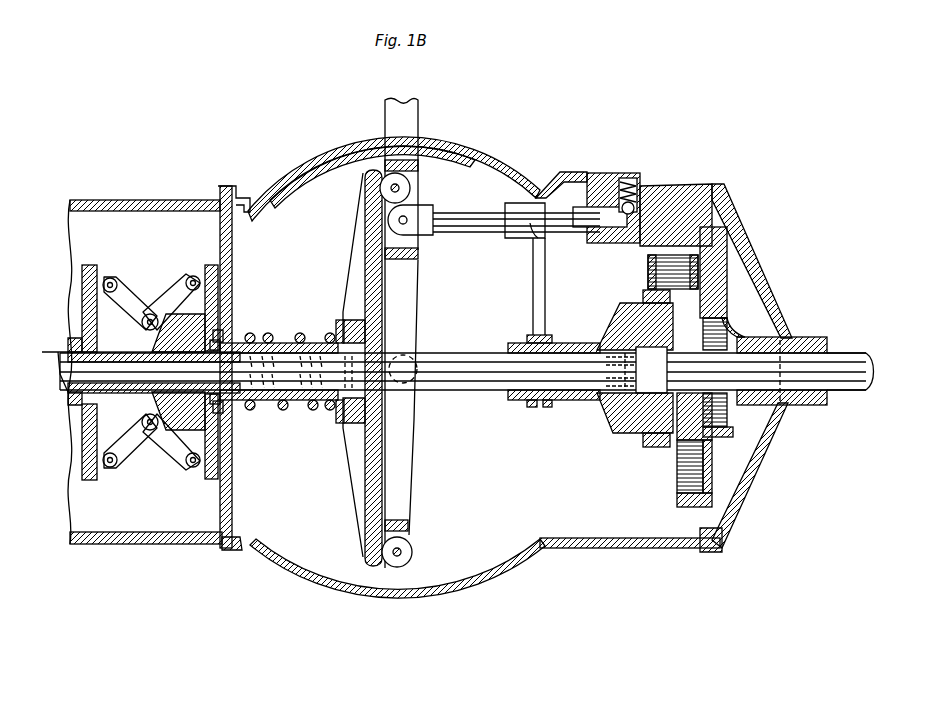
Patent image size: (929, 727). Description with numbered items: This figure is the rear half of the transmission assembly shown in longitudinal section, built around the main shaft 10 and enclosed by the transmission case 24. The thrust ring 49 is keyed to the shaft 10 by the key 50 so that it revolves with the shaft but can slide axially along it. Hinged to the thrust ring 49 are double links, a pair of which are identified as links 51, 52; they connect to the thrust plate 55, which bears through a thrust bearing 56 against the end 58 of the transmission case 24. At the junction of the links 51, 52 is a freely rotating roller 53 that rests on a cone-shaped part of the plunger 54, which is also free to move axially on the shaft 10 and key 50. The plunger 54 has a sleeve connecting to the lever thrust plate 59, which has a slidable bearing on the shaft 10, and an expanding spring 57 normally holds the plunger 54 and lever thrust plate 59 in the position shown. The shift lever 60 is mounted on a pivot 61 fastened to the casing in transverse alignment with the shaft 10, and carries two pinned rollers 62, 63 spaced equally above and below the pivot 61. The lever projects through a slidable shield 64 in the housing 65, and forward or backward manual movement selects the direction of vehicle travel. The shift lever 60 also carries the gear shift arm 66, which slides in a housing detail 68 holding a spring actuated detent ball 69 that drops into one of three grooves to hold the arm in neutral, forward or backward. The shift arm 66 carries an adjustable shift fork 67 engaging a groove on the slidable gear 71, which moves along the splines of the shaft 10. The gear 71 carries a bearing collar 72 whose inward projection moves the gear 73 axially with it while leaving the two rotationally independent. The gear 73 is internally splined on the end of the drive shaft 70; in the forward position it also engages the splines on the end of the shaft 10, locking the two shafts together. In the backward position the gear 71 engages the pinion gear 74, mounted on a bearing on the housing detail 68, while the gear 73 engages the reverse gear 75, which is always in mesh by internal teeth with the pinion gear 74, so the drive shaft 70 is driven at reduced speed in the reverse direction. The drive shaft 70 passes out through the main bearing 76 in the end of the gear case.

The shaft 10 is at (461, 389).
The transmission case 24 is at (137, 200).
The thrust ring 49 is at (94, 266).
The key 50 is at (127, 369).
The link 51 is at (126, 296).
The link 52 is at (171, 293).
The roller 53 is at (150, 440).
The plunger 54 is at (181, 434).
The thrust plate 55 is at (212, 480).
The thrust bearing 56 is at (253, 330).
The expanding spring 57 is at (283, 330).
The end of the transmission case 58 is at (233, 283).
The lever thrust plate 59 is at (373, 449).
The shift lever 60 is at (413, 121).
The pivot 61 is at (413, 356).
The pinned roller 62 is at (406, 186).
The pinned roller 63 is at (408, 548).
The slidable shield 64 is at (345, 152).
The housing 65 is at (619, 549).
The gear shift arm 66 is at (472, 228).
The adjustable shift fork 67 is at (540, 296).
The housing detail 68 is at (653, 193).
The spring actuated detent ball 69 is at (627, 216).
The drive shaft 70 is at (856, 360).
The slidable gear 71 is at (609, 410).
The bearing collar 72 is at (648, 327).
The gear 73 is at (666, 405).
The pinion gear 74 is at (706, 241).
The reverse gear 75 is at (737, 307).
The main bearing 76 is at (812, 340).